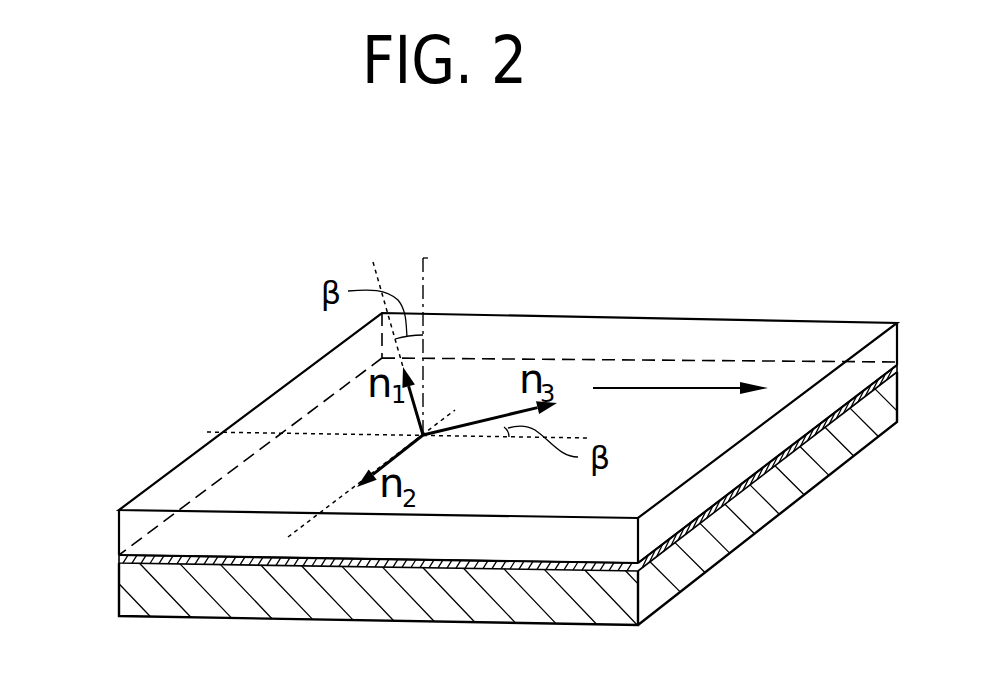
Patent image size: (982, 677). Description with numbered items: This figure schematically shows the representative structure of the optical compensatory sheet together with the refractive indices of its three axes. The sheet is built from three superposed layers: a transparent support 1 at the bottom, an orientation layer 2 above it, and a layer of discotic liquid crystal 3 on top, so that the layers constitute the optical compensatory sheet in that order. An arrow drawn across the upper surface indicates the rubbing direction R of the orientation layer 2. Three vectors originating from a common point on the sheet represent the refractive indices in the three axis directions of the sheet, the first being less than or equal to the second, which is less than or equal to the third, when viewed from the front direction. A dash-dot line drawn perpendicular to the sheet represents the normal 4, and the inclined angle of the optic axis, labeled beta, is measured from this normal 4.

The transparent support 1 is at (118, 585).
The orientation layer 2 is at (118, 558).
The layer of discotic liquid crystal 3 is at (118, 531).
The normal 4 is at (427, 262).
The rubbing direction R is at (695, 388).